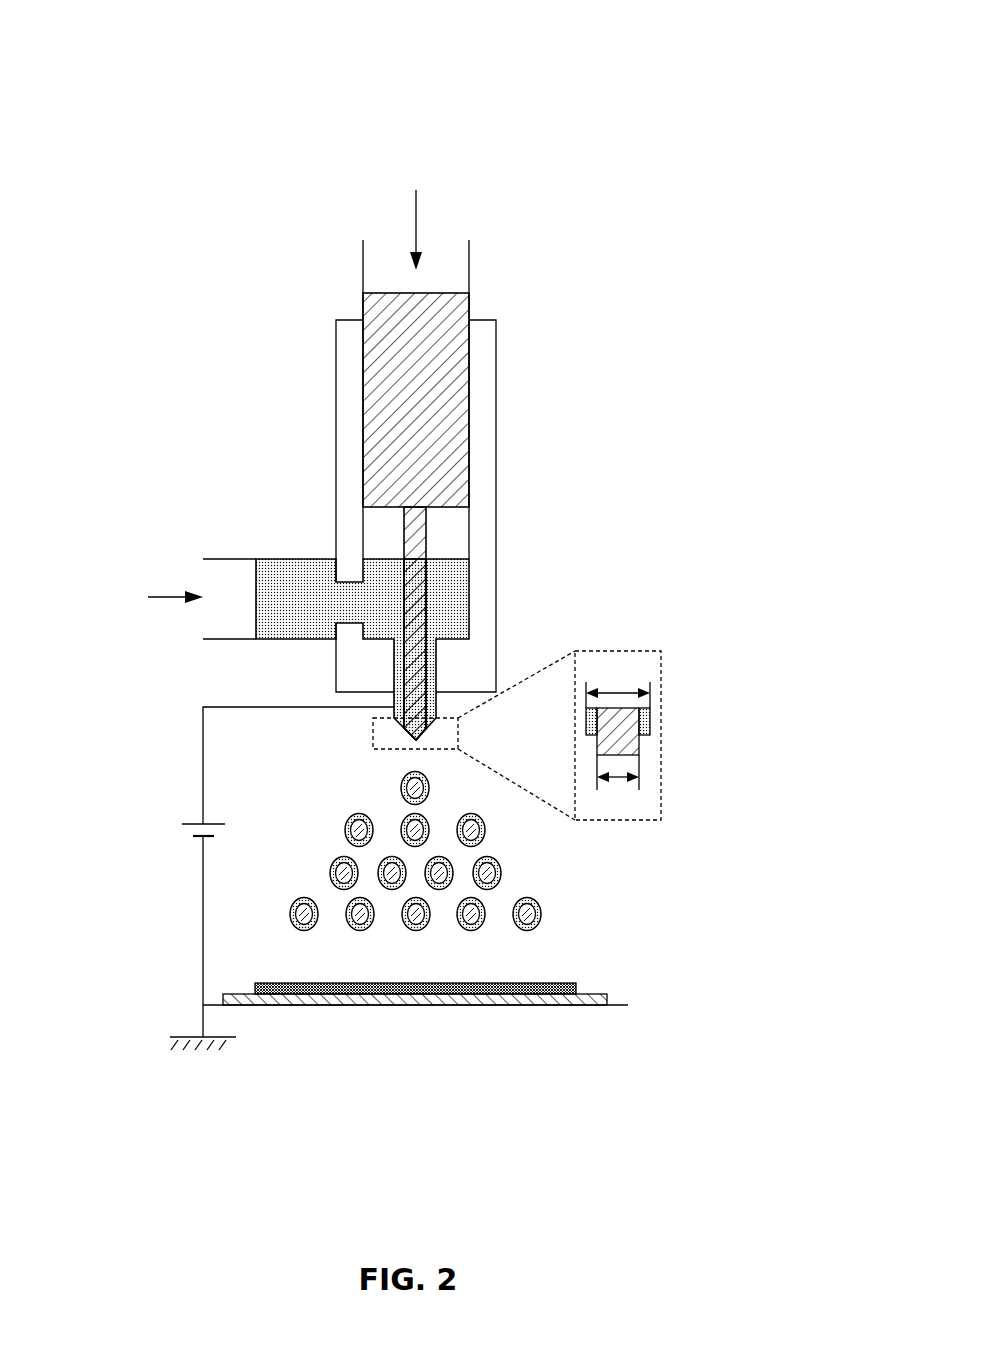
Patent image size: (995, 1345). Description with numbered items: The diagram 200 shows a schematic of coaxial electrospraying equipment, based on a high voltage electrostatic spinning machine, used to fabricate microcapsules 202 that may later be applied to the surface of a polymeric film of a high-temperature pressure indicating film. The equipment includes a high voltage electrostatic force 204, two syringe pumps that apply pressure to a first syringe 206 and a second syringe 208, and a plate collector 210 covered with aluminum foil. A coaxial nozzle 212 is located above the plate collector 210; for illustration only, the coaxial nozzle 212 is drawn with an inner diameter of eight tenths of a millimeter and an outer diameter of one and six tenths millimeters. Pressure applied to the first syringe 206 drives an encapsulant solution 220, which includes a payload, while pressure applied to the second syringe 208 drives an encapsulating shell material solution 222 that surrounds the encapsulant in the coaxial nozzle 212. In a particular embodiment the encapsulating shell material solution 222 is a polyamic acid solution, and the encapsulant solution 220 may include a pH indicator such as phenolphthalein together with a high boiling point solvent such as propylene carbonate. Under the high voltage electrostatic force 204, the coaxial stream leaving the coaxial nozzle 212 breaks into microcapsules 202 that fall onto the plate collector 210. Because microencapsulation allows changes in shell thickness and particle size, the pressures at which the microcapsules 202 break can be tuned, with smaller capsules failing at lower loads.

The diagram 200 is at (752, 46).
The microcapsules 202 is at (540, 857).
The high voltage electrostatic force 204 is at (203, 877).
The first syringe 206 is at (363, 268).
The second syringe 208 is at (237, 559).
The plate collector 210 is at (417, 1005).
The coaxial nozzle 212 is at (617, 651).
The encapsulant solution 220 is at (416, 470).
The encapsulating shell material solution 222 is at (372, 597).